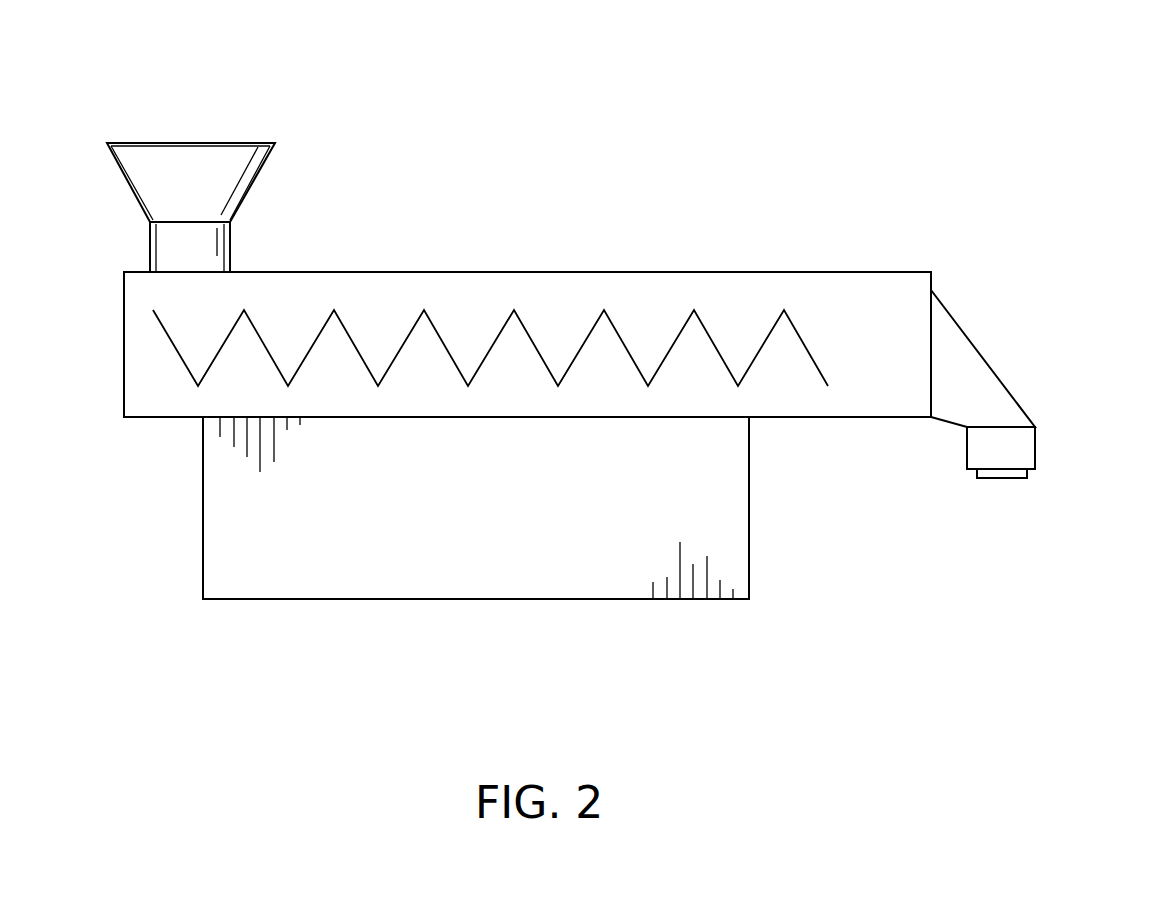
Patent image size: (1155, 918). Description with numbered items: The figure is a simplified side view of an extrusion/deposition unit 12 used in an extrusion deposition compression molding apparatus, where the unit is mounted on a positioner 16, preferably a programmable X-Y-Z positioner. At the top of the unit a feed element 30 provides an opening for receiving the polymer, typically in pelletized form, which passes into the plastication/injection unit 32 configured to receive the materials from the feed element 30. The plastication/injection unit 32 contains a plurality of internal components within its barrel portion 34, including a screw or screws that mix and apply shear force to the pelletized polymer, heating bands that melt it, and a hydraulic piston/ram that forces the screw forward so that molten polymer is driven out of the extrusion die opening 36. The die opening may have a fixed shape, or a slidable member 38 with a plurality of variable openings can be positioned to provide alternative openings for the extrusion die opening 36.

The extrusion/deposition unit 12 is at (685, 141).
The positioner 16 is at (545, 600).
The feed element 30 is at (123, 177).
The plastication/injection unit 32 is at (873, 268).
The barrel portion 34 is at (758, 271).
The extrusion die opening 36 is at (1035, 452).
The slidable member 38 is at (1002, 478).